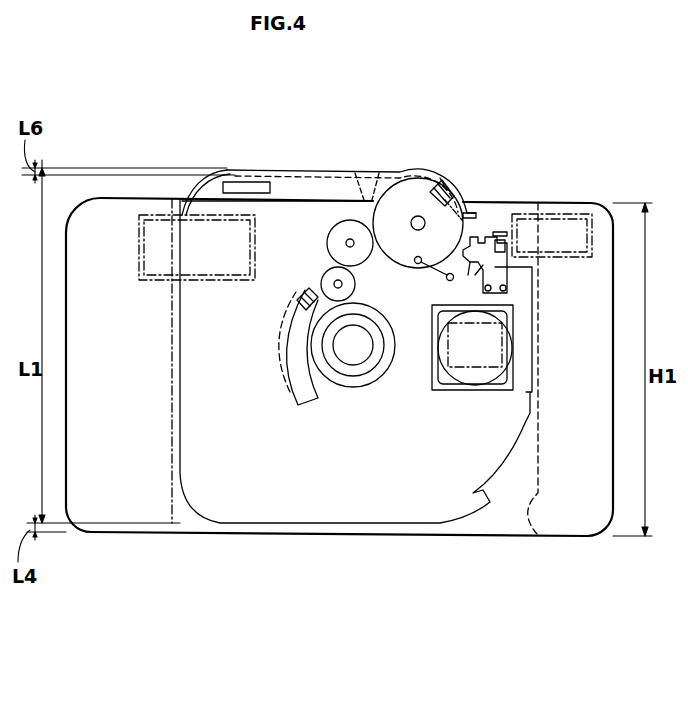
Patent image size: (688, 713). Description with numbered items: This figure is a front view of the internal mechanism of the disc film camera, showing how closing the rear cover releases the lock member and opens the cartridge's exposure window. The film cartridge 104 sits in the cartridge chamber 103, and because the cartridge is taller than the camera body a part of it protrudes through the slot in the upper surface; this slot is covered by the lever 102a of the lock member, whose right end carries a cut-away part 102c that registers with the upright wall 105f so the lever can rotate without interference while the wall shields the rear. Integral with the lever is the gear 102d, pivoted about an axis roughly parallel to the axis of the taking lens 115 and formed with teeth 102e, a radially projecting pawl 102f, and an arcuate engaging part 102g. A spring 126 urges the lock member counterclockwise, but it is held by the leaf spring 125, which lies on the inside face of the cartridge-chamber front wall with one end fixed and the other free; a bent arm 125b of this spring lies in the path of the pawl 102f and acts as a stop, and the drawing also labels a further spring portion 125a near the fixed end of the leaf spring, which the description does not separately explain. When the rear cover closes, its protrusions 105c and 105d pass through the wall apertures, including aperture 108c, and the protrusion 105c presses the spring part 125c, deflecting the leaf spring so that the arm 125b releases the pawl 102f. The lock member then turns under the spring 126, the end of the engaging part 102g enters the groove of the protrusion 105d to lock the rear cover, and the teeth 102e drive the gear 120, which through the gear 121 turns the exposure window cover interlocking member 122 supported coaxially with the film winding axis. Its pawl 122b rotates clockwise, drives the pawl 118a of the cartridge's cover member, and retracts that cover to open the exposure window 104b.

The lever 102a is at (292, 170).
The cut-away part 102c is at (225, 175).
The gear 102d is at (393, 248).
The teeth 102e is at (365, 203).
The pawl 102f is at (473, 210).
The arcuate engaging part 102g is at (432, 172).
The cartridge chamber 103 is at (530, 536).
The film cartridge 104 is at (489, 502).
The exposure window 104b is at (490, 377).
The protrusion 105c is at (510, 240).
The protrusion 105d is at (442, 178).
The upright wall 105f is at (340, 172).
The aperture 108c is at (503, 234).
The taking lens 115 is at (453, 387).
The pawl 118a is at (300, 292).
The gear 120 is at (327, 243).
The gear 121 is at (322, 270).
The exposure window cover interlocking member 122 is at (358, 380).
The pawl 122b is at (287, 320).
The leaf spring 125 is at (505, 268).
The lever end 125a is at (490, 236).
The arm 125b is at (452, 281).
The spring part 125c is at (497, 236).
The spring 126 is at (427, 262).